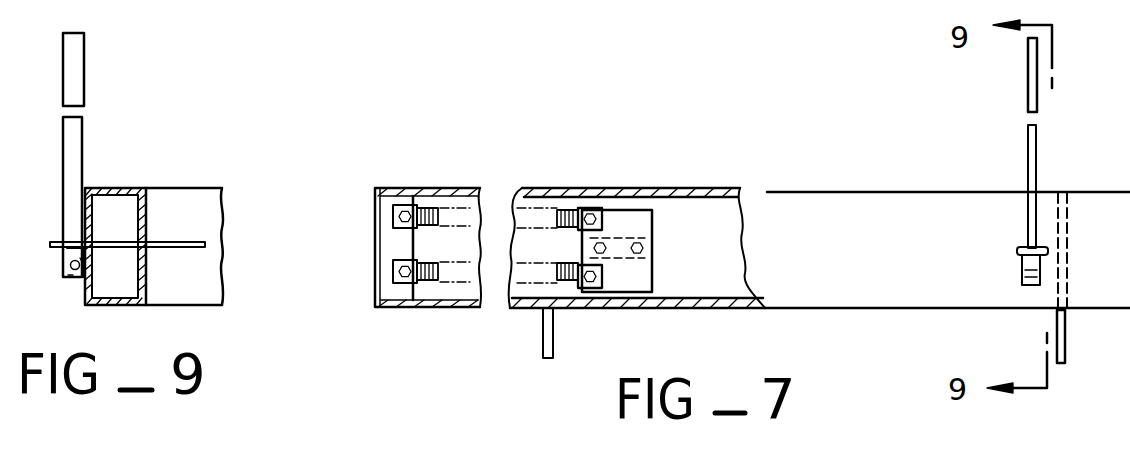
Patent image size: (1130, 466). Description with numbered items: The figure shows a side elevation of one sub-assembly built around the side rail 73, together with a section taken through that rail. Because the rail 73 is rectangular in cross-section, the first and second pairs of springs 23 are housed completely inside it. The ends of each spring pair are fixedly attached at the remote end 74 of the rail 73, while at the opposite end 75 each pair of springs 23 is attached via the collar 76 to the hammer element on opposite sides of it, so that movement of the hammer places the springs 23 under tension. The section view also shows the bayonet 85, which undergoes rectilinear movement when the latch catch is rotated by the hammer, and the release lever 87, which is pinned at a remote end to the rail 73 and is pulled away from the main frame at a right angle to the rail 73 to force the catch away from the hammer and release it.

In FIG. 7, the springs 23 is at (557, 207).
In FIG. 9, the rail 73 is at (109, 192).
In FIG. 7, the rail 73 is at (886, 200).
In FIG. 7, the remote end 74 is at (393, 186).
In FIG. 7, the opposite end 75 is at (603, 215).
In FIG. 7, the collar 76 is at (640, 218).
In FIG. 9, the bayonet 85 is at (197, 242).
In FIG. 9, the release lever 87 is at (85, 50).